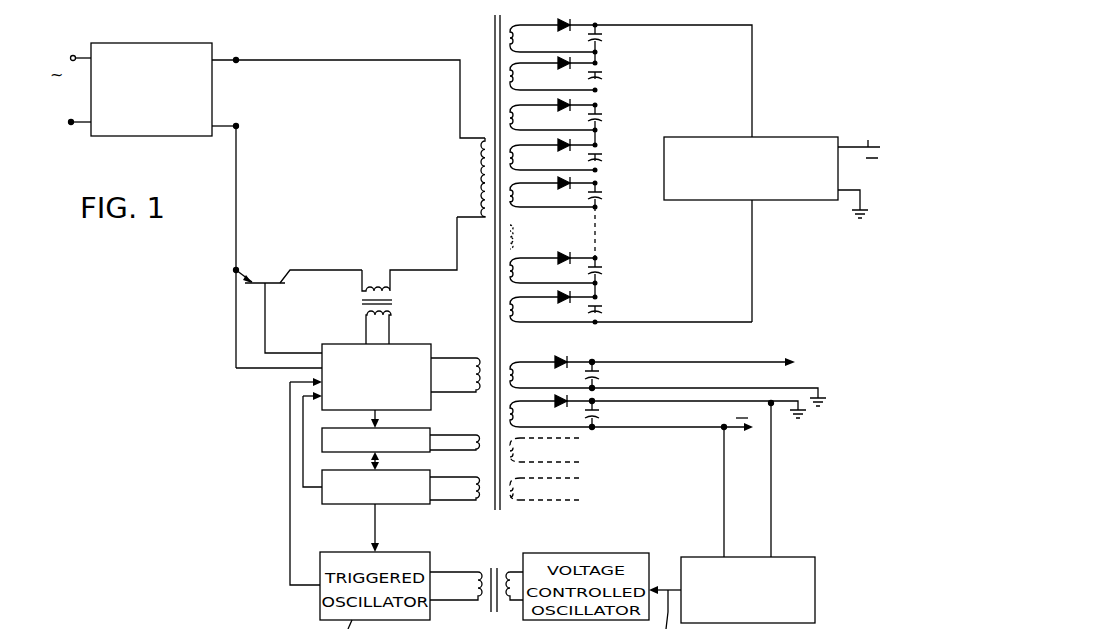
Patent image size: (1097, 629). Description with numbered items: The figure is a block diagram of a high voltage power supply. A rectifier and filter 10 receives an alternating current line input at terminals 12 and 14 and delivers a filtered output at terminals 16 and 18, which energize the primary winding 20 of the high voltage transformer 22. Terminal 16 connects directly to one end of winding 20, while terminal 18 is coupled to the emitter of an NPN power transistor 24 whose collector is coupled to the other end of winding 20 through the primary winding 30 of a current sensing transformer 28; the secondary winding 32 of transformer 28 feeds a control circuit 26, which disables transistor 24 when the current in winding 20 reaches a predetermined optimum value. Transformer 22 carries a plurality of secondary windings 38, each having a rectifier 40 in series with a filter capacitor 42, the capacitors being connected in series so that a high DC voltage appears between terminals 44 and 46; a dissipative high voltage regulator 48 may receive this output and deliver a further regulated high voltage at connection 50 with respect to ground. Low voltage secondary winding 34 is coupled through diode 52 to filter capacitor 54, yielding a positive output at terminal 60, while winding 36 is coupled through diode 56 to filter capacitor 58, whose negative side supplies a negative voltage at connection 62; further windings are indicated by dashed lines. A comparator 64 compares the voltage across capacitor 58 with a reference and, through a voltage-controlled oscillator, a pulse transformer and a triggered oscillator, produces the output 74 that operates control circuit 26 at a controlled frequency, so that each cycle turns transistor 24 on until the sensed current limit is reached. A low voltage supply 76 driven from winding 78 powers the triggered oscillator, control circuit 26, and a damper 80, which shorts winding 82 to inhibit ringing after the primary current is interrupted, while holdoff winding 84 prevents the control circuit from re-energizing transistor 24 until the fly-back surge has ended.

The rectifier and filter 10 is at (163, 43).
The terminal 12 is at (72, 55).
The terminal 14 is at (70, 122).
The terminal 16 is at (236, 57).
The terminal 18 is at (238, 126).
The primary winding 20 is at (480, 190).
The high voltage transformer 22 is at (498, 24).
The NPN power transistor 24 is at (258, 288).
The control circuit 26 is at (336, 343).
The current sensing transformer 28 is at (386, 280).
The primary winding 30 is at (378, 289).
The secondary winding 32 is at (363, 312).
The low voltage secondary winding 34 is at (511, 359).
The low voltage secondary winding 36 is at (512, 440).
The secondary windings 38 is at (508, 155).
The rectifier 40 is at (557, 303).
The filter capacitor 42 is at (604, 308).
The terminal 44 is at (600, 25).
The terminal 46 is at (597, 324).
The high voltage regulator 48 is at (783, 137).
The connection 50 is at (868, 146).
The diode 52 is at (566, 356).
The filter capacitor 54 is at (602, 375).
The diode 56 is at (558, 406).
The filter capacitor 58 is at (602, 414).
The terminal 60 is at (796, 361).
The connection 62 is at (742, 431).
The comparator 64 is at (783, 557).
The output 74 is at (290, 527).
The low voltage supply 76 is at (407, 505).
The winding 78 is at (478, 503).
The damper 80 is at (432, 428).
The winding 82 is at (478, 452).
The holdoff winding 84 is at (480, 359).